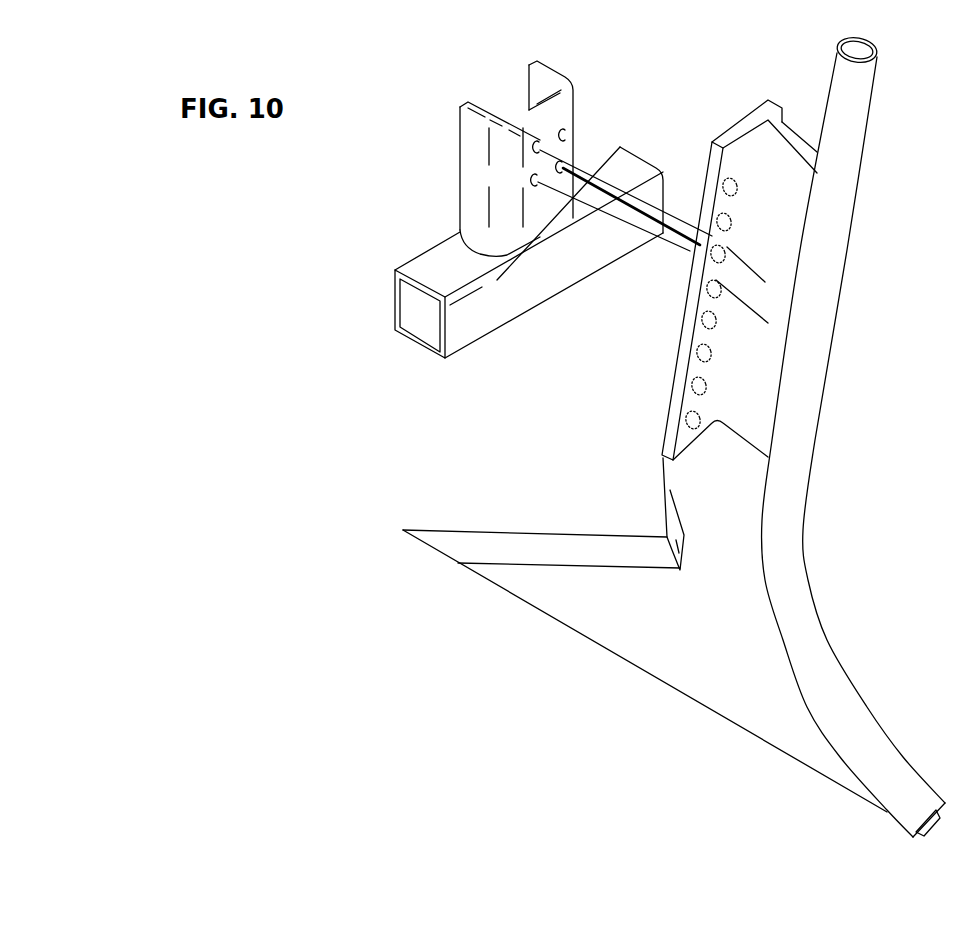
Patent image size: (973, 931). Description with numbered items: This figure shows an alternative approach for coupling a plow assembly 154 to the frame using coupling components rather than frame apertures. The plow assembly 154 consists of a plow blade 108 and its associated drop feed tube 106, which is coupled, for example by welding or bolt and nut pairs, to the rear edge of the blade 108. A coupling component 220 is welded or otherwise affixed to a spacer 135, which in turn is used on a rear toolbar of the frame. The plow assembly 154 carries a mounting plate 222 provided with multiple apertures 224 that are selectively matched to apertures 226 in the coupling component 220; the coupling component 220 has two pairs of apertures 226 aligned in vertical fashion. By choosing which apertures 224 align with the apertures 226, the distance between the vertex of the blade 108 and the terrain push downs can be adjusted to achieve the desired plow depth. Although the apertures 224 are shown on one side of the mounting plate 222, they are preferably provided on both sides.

The drop feed tube 106 is at (818, 338).
The plow blade 108 is at (637, 651).
The spacer 135 is at (457, 248).
The plow assembly 154 is at (778, 95).
The coupling component 220 is at (477, 220).
The mounting plate 222 is at (725, 130).
The apertures 224 is at (737, 190).
The apertures 226 is at (532, 145).